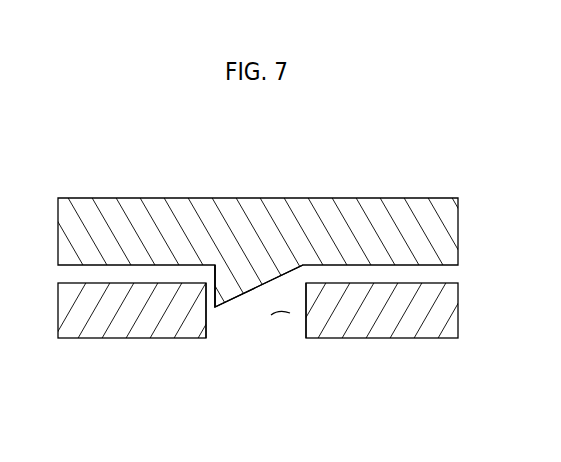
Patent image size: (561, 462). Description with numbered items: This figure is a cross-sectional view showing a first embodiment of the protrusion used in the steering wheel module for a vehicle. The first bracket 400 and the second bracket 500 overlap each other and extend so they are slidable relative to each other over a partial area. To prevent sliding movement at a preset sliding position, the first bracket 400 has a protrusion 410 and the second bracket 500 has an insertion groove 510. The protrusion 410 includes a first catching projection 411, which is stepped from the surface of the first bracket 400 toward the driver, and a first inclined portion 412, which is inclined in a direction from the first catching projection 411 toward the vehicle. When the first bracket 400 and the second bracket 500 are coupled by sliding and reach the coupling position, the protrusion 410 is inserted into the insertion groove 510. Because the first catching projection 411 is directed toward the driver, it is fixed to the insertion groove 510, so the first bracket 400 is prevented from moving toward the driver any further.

The first bracket 400 is at (352, 225).
The protrusion 410 is at (233, 285).
The first catching projection 411 is at (215, 288).
The first inclined portion 412 is at (242, 295).
The second bracket 500 is at (93, 323).
The insertion groove 510 is at (280, 317).